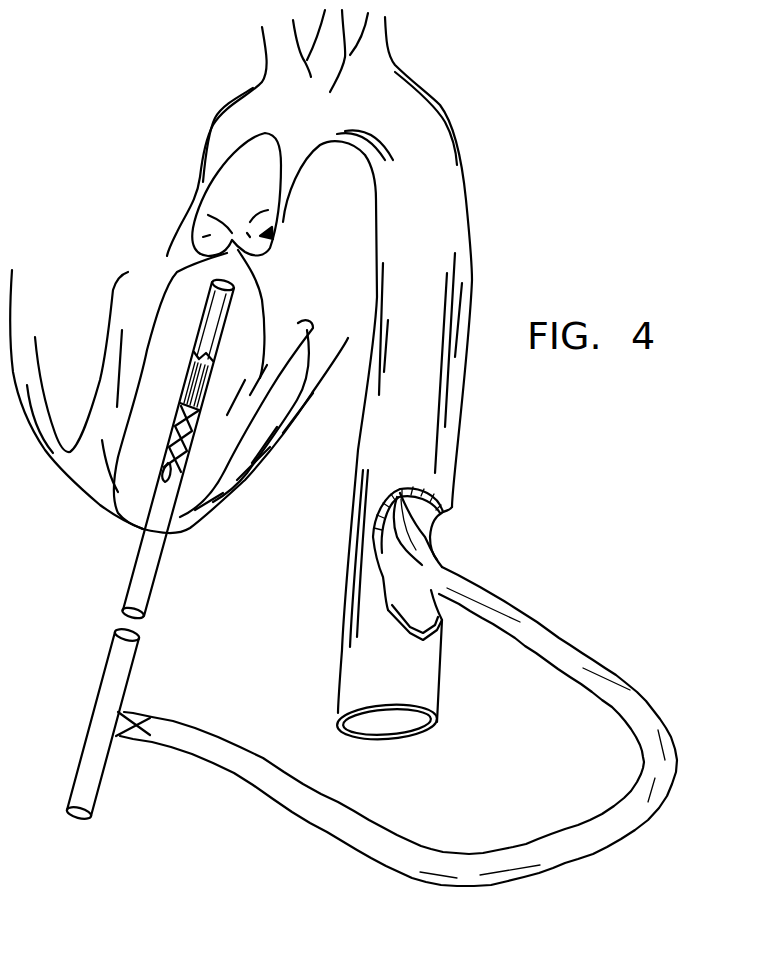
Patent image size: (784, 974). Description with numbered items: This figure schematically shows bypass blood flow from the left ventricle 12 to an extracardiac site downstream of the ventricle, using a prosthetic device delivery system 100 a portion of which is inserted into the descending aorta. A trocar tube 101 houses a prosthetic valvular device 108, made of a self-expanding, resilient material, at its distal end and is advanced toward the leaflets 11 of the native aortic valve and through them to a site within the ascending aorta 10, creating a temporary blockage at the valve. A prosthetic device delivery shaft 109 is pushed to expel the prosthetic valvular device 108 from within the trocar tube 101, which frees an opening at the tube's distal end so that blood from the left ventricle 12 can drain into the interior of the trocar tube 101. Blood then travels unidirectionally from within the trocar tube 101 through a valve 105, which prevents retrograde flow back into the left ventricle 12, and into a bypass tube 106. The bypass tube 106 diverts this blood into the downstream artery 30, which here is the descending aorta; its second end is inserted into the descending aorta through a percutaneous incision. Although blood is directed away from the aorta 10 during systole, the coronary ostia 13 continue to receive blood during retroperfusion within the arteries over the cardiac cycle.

The ascending aorta 10 is at (253, 115).
The leaflets 11 is at (257, 265).
The left ventricle 12 is at (170, 315).
The coronary ostia 13 is at (268, 231).
The artery 30 is at (430, 707).
The prosthetic device delivery system 100 is at (172, 572).
The trocar tube 101 is at (130, 572).
The unidirectional valve 105 is at (143, 722).
The bypass tube 106 is at (600, 693).
The prosthetic valvular device 108 is at (183, 404).
The prosthetic device delivery shaft 109 is at (170, 488).